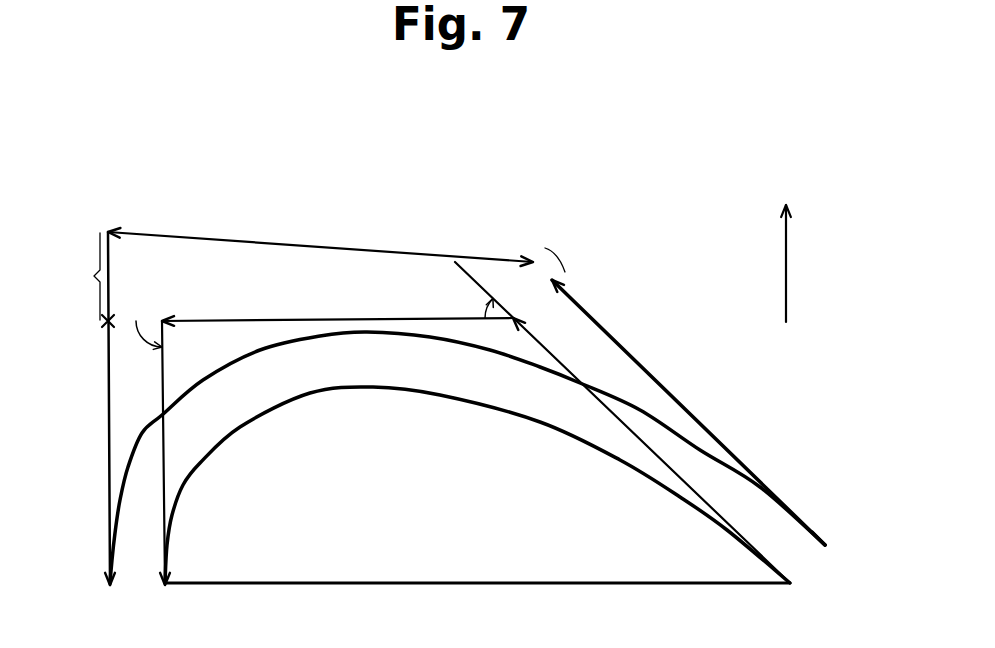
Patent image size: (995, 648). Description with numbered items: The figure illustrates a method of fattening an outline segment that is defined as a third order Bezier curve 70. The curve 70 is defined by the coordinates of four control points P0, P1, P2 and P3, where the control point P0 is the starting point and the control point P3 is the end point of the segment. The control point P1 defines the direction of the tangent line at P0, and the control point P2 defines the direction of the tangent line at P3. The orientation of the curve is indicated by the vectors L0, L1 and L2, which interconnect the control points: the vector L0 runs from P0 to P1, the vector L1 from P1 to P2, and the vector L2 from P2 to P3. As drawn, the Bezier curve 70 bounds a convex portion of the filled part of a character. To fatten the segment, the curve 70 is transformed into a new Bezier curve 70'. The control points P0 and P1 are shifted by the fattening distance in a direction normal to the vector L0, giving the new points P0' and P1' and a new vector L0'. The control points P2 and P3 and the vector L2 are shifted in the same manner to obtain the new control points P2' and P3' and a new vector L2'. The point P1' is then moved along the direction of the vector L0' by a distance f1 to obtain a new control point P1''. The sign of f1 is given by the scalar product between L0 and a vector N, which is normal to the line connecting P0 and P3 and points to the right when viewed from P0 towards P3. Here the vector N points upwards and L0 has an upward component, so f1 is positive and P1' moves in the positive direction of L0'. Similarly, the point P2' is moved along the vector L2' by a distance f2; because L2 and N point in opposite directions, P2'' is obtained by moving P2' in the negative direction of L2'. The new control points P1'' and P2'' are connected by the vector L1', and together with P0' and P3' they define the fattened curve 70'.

The third order Bezier curve 70 is at (477, 468).
The new Bezier curve 70' is at (467, 426).
The control point P0 is at (483, 601).
The new point P0' is at (840, 546).
The control point P1 is at (531, 316).
The new point P1' is at (576, 290).
The new control point P1'' is at (530, 250).
The control point P2 is at (163, 307).
The new control point P2' is at (87, 326).
The new control point P2'' is at (88, 222).
The control point P3 is at (171, 596).
The new control point P3' is at (95, 596).
The vector L0 is at (622, 422).
The new vector L0' is at (688, 412).
The vector L1 is at (337, 309).
The vector L1' is at (320, 241).
The vector L2 is at (175, 453).
The new vector L2' is at (90, 408).
The distance f1 is at (563, 256).
The distance f2 is at (85, 276).
The vector N is at (812, 263).